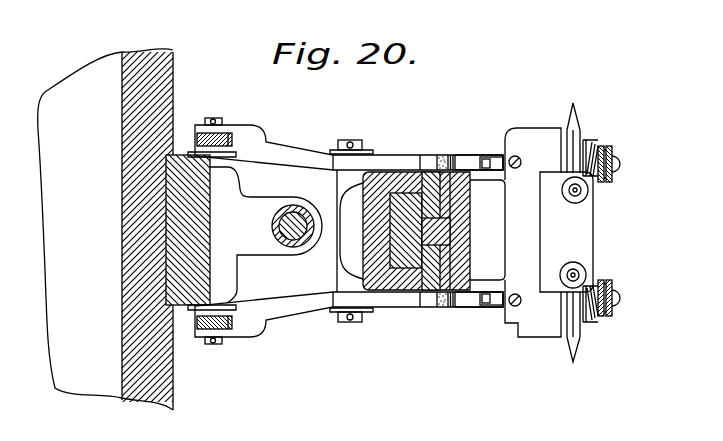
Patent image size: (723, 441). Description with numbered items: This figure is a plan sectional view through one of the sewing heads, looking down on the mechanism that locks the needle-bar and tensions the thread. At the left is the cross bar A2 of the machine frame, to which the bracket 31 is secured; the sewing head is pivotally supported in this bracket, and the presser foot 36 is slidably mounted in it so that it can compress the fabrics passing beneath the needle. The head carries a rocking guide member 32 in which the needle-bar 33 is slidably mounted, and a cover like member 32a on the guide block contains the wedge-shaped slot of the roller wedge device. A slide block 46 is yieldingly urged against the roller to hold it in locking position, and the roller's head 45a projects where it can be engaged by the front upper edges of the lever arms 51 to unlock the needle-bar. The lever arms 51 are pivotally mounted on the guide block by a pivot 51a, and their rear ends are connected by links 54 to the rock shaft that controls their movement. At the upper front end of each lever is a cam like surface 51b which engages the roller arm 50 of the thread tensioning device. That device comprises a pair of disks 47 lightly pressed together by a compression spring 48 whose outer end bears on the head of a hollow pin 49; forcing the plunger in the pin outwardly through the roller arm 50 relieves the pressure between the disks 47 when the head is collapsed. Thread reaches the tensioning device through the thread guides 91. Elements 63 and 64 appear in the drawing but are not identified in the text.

The cross bar A2 is at (165, 80).
The bracket 31 is at (207, 194).
The rocking guide member 32 is at (382, 292).
The cover like member 32a is at (470, 248).
The needle-bar 33 is at (403, 292).
The presser foot 36 is at (292, 240).
The head 45a is at (436, 303).
The slide block 46 is at (433, 170).
The disks 47 is at (574, 358).
The compression spring 48 is at (591, 318).
The hollow pin 49 is at (620, 305).
The roller arm 50 is at (485, 307).
The lever arms 51 is at (468, 306).
The pivot 51a is at (370, 113).
The cam like surface 51b is at (466, 160).
The links 54 is at (222, 330).
The washer 63 is at (449, 158).
The nut 64 is at (612, 294).
The thread guides 91 is at (586, 197).